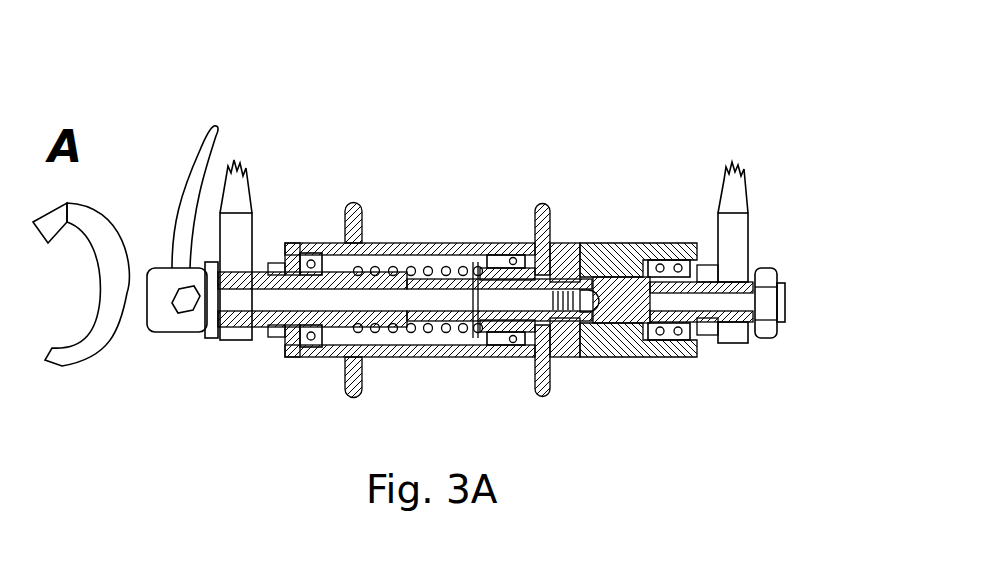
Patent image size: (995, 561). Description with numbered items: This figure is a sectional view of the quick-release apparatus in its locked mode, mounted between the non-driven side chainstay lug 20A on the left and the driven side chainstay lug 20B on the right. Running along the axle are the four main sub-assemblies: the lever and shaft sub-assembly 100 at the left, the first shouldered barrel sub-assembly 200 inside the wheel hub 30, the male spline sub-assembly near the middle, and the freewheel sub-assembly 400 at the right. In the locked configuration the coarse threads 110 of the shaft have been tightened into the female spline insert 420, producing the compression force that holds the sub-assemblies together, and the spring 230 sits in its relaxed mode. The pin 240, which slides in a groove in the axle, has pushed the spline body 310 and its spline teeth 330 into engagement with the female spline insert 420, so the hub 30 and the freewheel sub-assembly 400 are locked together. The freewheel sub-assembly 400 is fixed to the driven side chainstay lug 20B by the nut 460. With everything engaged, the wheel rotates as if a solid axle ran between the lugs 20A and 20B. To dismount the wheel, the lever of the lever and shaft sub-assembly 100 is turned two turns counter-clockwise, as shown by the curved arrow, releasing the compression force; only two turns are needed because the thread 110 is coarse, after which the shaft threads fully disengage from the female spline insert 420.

The lever and shaft sub-assembly 100 is at (187, 200).
The non-driven side chainstay lug 20A is at (232, 220).
The driven side chainstay lug 20B is at (738, 227).
The wheel hub 30 is at (353, 207).
The first shouldered barrel sub-assembly 200 is at (328, 272).
The spring 230 is at (415, 268).
The pin 240 is at (478, 272).
The threads 110 is at (575, 275).
The freewheel sub-assembly 400 is at (603, 253).
The female spline insert 420 is at (585, 338).
The nut 460 is at (768, 335).
The spline body 310 is at (485, 337).
The spline teeth 330 is at (518, 347).